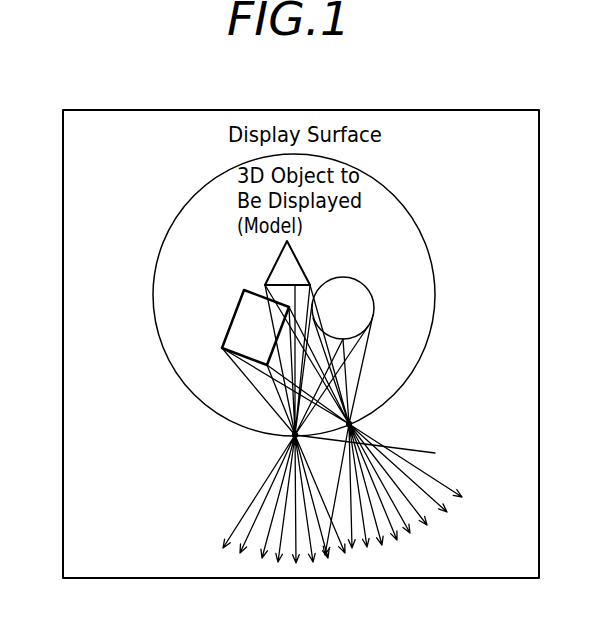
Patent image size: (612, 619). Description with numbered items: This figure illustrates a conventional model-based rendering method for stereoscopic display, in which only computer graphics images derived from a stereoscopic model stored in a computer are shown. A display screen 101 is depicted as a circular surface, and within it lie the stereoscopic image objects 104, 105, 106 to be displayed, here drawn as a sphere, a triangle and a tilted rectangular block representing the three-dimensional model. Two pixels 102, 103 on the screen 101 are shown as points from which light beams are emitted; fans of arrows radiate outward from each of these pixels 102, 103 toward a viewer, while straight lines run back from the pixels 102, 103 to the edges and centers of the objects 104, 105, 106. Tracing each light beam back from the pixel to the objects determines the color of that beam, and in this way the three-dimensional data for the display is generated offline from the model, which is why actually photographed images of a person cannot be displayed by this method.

The screen 101 is at (433, 261).
The pixel 102 is at (295, 437).
The pixel 103 is at (349, 424).
The stereoscopic image object 104 is at (373, 310).
The stereoscopic image object 105 is at (308, 262).
The stereoscopic image object 106 is at (247, 335).